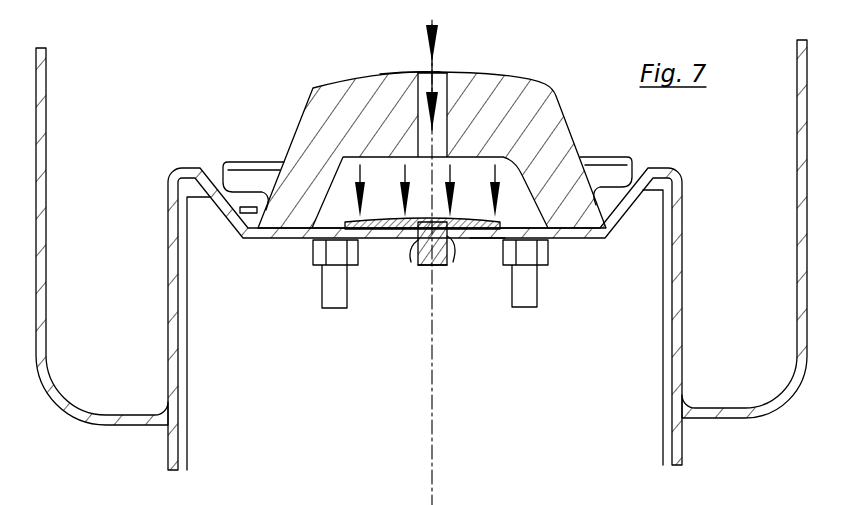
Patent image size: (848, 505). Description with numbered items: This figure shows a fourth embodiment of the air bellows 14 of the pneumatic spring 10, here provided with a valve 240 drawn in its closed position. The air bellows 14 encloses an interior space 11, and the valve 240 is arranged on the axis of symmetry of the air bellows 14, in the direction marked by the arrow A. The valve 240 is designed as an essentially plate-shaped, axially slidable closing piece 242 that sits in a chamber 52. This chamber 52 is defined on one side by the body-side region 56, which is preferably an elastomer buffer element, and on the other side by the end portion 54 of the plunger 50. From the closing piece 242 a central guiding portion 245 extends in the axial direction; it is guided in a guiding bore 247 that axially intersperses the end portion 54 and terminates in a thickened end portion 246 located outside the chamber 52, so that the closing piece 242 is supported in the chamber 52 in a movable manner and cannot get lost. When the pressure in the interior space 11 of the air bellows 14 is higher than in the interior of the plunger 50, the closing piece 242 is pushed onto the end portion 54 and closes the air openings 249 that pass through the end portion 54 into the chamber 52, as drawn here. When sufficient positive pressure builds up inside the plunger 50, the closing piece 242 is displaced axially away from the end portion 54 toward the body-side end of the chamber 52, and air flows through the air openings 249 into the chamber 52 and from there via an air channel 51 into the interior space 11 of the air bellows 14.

The pneumatic spring 10 is at (158, 452).
The interior space of the air bellows 11 is at (728, 138).
The air bellows 14 is at (797, 163).
The plunger 50 is at (681, 390).
The air channel 51 is at (414, 73).
The chamber 52 is at (312, 240).
The end portion of the plunger 54 is at (578, 240).
The body-side region 56 is at (566, 115).
The load direction A is at (446, 44).
The valve 240 is at (422, 301).
The closing piece 242 is at (397, 236).
The central guiding portion 245 is at (420, 252).
The thickened end portion 246 is at (438, 268).
The guiding bore 247 is at (444, 244).
The air openings 249 is at (495, 246).